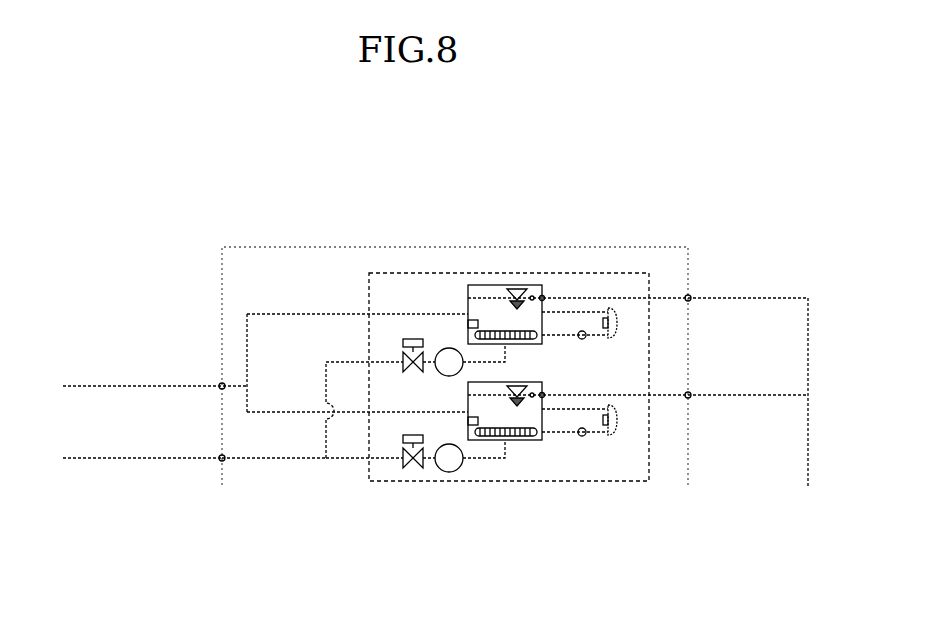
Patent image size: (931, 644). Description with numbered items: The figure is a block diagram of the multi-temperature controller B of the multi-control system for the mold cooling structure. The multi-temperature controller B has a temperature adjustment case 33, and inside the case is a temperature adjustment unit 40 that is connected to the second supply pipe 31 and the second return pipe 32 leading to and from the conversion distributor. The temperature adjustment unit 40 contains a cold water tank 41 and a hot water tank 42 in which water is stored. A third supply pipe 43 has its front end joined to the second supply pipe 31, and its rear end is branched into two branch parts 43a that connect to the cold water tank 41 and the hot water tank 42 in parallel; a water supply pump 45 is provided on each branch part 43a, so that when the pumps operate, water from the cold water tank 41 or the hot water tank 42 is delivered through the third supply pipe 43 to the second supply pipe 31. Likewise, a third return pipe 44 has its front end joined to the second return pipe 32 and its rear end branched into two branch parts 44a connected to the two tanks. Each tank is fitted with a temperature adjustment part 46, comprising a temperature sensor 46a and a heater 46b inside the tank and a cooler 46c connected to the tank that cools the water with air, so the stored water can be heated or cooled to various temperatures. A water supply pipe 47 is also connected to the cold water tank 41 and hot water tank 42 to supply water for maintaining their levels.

The second supply pipe 31 is at (136, 457).
The second return pipe 32 is at (118, 385).
The temperature adjustment case 33 is at (250, 247).
The temperature adjustment unit 40 is at (413, 258).
The cold water tank 41 is at (557, 433).
The hot water tank 42 is at (468, 291).
The third supply pipe 43 is at (279, 459).
The branch part 43a is at (341, 360).
The third return pipe 44 is at (240, 386).
The branch part 44a is at (286, 312).
The water supply pump 45 is at (437, 352).
The temperature adjustment part 46 is at (529, 314).
The temperature sensor 46a is at (478, 324).
The heater 46b is at (528, 345).
The cooler 46c is at (628, 322).
The water supply pipe 47 is at (542, 296).
The multi-temperature controller B is at (655, 233).